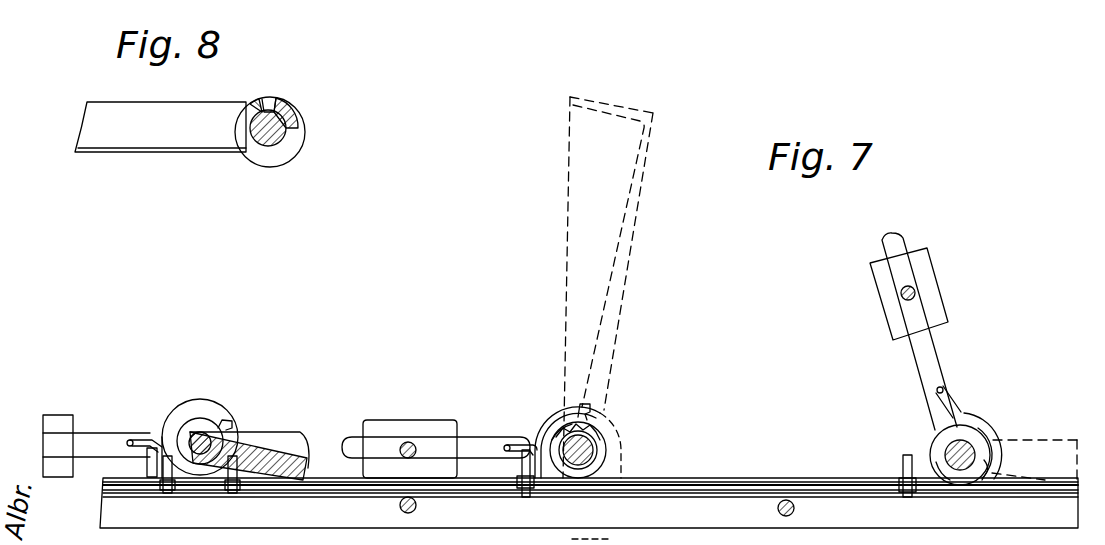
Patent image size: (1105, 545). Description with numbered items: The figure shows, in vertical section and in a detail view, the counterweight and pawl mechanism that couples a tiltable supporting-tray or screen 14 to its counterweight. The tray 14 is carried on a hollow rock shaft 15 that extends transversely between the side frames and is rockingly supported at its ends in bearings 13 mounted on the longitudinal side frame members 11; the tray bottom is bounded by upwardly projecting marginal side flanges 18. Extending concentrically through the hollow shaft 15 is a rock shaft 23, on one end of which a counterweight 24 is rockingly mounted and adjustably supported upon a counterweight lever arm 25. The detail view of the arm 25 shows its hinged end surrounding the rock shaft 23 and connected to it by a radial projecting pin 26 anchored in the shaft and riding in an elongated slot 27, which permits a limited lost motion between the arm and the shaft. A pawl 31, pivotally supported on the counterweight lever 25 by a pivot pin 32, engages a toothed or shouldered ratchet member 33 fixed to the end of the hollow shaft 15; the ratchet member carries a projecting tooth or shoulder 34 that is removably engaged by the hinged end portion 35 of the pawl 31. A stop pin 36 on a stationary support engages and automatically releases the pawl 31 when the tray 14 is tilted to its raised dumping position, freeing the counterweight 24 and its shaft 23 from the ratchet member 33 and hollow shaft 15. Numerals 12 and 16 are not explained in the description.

In FIG. 7, the longitudinal side frame member 11 is at (286, 515).
In FIG. 7, the base 12 is at (565, 534).
In FIG. 7, the bearing 13 is at (227, 420).
In FIG. 7, the tiltable supporting-tray or screen 14 is at (628, 247).
In FIG. 7, the hollow rock shaft 15 is at (243, 440).
In FIG. 7, the support 16 is at (669, 534).
In FIG. 7, the marginal side flange 18 is at (300, 434).
In FIG. 7, the rock shaft 23 is at (204, 442).
In FIG. 7, the counterweight 24 is at (58, 418).
In FIG. 8, the counterweight lever arm 25 is at (172, 118).
In FIG. 7, the counterweight lever arm 25 is at (92, 434).
In FIG. 8, the radial projecting pin 26 is at (262, 98).
In FIG. 8, the elongated slot 27 is at (278, 97).
In FIG. 7, the pawl 31 is at (185, 400).
In FIG. 7, the pivot pin 32 is at (131, 440).
In FIG. 7, the ratchet member 33 is at (607, 443).
In FIG. 7, the projecting tooth or shoulder 34 is at (567, 415).
In FIG. 7, the hinged end portion of pawl 35 is at (597, 412).
In FIG. 7, the stop pin 36 is at (142, 464).